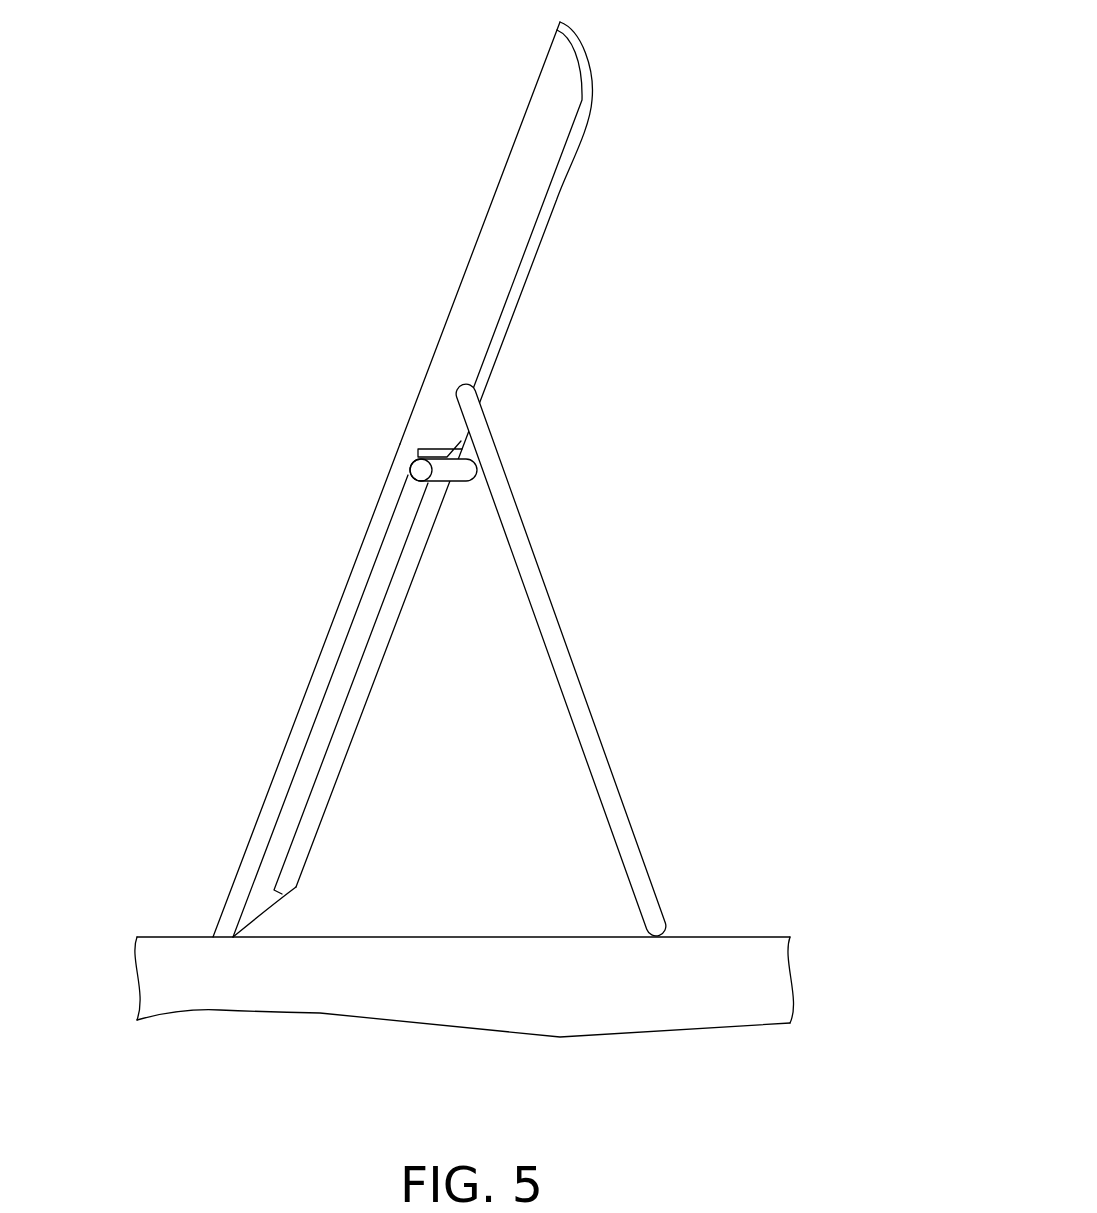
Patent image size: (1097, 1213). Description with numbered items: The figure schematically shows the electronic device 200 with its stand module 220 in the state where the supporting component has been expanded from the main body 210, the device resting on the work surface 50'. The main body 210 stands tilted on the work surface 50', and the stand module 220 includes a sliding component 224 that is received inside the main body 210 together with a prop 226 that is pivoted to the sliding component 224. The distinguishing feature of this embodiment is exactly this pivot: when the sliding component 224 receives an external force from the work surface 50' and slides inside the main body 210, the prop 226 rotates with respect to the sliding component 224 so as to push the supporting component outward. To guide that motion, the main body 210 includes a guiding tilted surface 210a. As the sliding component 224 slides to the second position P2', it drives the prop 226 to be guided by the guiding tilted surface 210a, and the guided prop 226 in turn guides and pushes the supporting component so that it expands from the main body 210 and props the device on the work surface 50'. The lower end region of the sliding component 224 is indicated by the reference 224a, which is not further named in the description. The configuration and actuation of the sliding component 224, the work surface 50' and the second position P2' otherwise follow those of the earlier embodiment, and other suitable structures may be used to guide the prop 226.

The electronic device 200 is at (470, 549).
The main body 210 is at (452, 479).
The guiding tilted surface 210a is at (437, 458).
The stand module 220 is at (475, 735).
The sliding component 224 is at (347, 735).
The bent bottom portion of support plate 224a is at (257, 915).
The prop 226 is at (450, 452).
The second position P2' is at (297, 690).
The work surface 50' is at (440, 953).